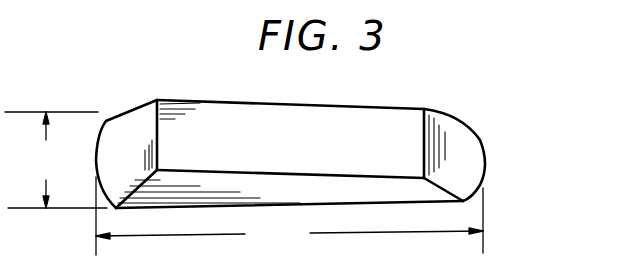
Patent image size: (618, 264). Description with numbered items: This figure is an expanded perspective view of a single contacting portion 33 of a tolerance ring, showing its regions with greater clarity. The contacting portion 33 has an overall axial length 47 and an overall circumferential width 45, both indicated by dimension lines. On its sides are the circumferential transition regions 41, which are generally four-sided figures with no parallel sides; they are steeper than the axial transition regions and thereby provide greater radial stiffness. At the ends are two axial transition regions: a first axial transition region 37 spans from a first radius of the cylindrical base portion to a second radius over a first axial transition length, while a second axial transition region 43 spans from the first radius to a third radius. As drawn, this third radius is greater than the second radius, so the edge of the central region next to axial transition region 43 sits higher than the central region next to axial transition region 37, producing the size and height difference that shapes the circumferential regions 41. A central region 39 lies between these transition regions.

The contacting portion 33 is at (476, 95).
The first axial transition region 37 is at (466, 162).
The top surface 39 is at (308, 122).
The circumferential transition regions 41 is at (380, 108).
The second axial transition region 43 is at (128, 113).
The overall circumferential width 45 is at (56, 160).
The overall axial length 47 is at (289, 216).